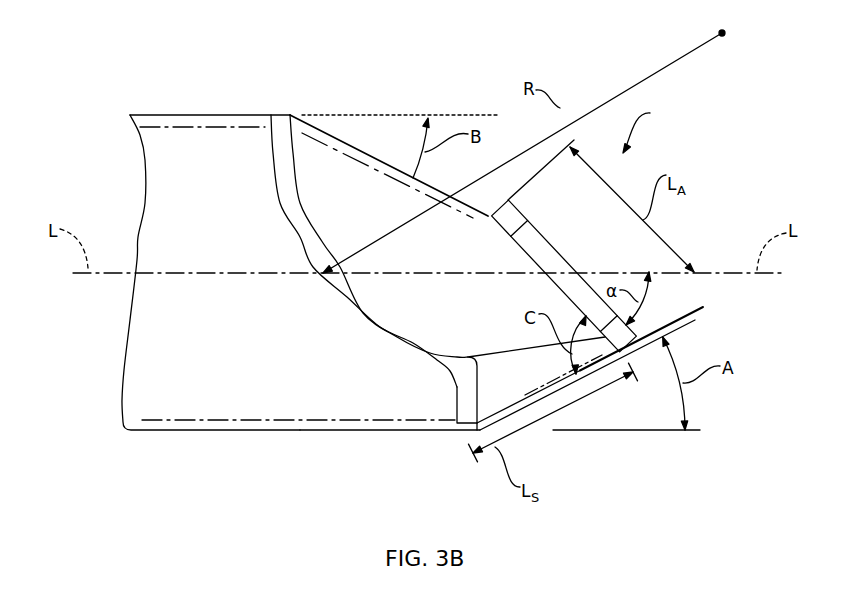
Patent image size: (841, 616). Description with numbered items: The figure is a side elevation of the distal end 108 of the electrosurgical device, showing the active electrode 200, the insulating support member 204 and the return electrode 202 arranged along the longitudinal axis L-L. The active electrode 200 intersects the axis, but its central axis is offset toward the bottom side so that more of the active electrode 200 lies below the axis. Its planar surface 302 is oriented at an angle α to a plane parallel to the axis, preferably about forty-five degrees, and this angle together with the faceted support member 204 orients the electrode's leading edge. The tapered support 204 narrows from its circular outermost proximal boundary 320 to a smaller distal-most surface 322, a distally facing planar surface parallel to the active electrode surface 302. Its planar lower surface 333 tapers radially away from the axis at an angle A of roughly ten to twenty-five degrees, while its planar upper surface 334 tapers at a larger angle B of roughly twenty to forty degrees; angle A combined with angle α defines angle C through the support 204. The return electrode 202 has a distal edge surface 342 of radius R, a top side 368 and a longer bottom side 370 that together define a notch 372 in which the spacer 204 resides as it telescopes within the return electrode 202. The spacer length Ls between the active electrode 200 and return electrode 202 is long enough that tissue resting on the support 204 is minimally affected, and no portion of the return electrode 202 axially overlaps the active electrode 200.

The distal end 108 is at (654, 129).
The active electrode 200 is at (537, 230).
The return electrode 202 is at (205, 398).
The insulating support member 204 is at (340, 178).
The active electrode planar surface 302 is at (573, 267).
The outermost proximal boundary 320 is at (351, 311).
The distal-most surface 322 is at (688, 306).
The planar lower surface 333 is at (522, 410).
The planar upper surface 334 is at (408, 203).
The distal edge surface 342 is at (380, 328).
The top side 368 is at (197, 135).
The bottom side 370 is at (256, 404).
The notch 372 is at (423, 415).